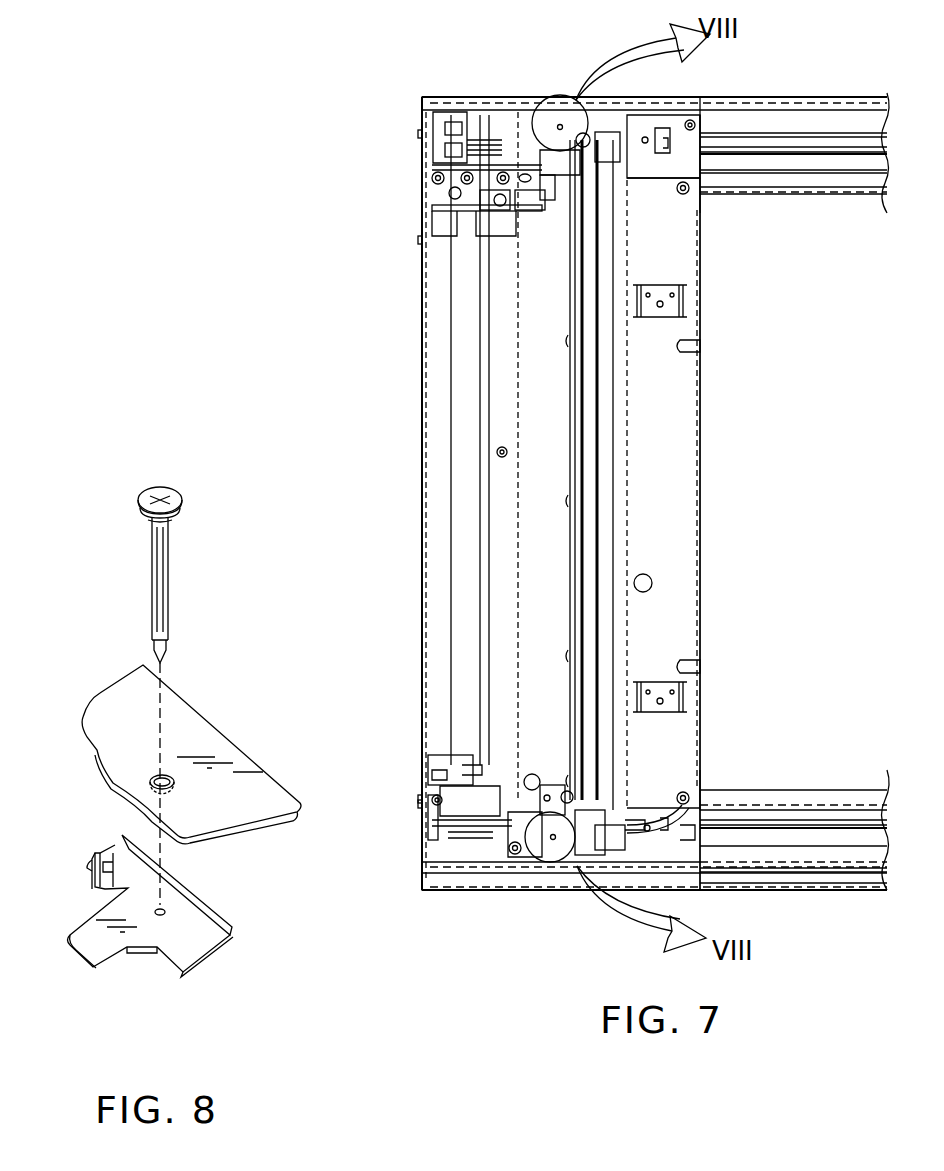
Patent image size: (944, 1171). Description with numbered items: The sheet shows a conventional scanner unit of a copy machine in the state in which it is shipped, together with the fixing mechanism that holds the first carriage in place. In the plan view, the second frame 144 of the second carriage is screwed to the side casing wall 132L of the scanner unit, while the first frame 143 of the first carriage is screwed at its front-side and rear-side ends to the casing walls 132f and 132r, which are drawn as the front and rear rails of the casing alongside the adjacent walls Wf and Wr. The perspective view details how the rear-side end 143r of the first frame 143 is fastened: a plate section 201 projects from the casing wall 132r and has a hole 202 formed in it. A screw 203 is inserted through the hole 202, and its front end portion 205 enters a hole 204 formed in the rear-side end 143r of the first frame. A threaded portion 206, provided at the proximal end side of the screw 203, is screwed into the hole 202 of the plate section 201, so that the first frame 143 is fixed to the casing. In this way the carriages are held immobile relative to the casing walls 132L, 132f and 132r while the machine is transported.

In FIG. 7, the left frame rail 132L is at (420, 342).
In FIG. 7, the rear frame rail 132r is at (840, 100).
In FIG. 7, the front frame rail 132f is at (831, 891).
In FIG. 7, the rear wall Wr is at (778, 150).
In FIG. 7, the front wall Wf is at (782, 821).
In FIG. 7, the side plate 143 is at (707, 372).
In FIG. 7, the carriage drive unit 144 is at (438, 194).
In FIG. 8, the mounting plate 201 is at (130, 690).
In FIG. 8, the mounting hole 202 is at (150, 782).
In FIG. 8, the screw shank 203 is at (170, 560).
In FIG. 8, the bracket hole 204 is at (153, 917).
In FIG. 8, the screw tip 205 is at (165, 650).
In FIG. 8, the screw head 206 is at (170, 515).
In FIG. 8, the right bracket 143r is at (217, 912).